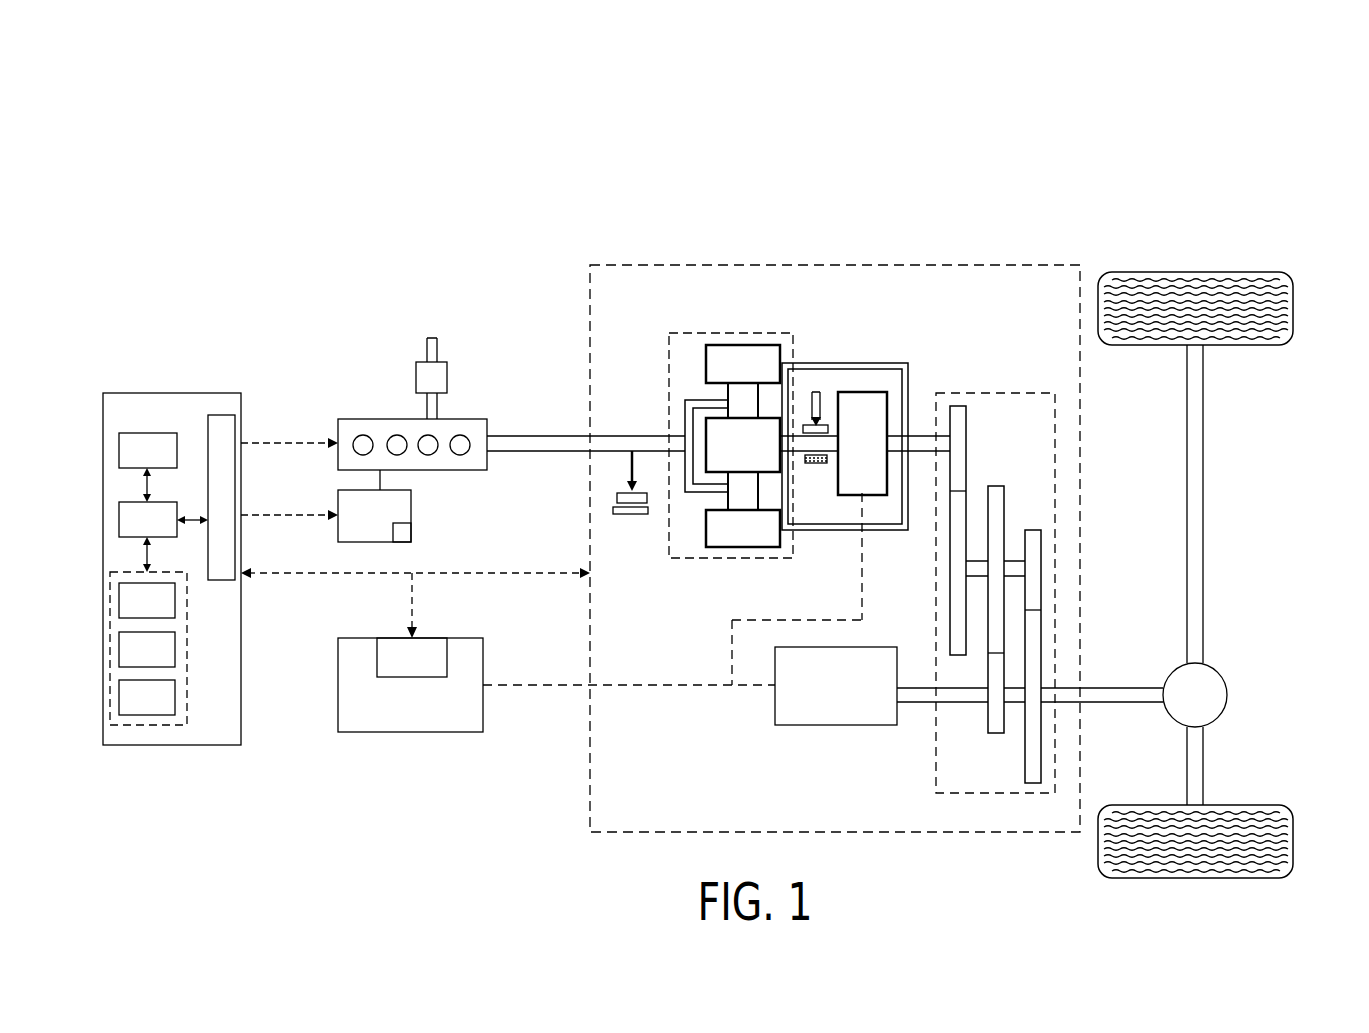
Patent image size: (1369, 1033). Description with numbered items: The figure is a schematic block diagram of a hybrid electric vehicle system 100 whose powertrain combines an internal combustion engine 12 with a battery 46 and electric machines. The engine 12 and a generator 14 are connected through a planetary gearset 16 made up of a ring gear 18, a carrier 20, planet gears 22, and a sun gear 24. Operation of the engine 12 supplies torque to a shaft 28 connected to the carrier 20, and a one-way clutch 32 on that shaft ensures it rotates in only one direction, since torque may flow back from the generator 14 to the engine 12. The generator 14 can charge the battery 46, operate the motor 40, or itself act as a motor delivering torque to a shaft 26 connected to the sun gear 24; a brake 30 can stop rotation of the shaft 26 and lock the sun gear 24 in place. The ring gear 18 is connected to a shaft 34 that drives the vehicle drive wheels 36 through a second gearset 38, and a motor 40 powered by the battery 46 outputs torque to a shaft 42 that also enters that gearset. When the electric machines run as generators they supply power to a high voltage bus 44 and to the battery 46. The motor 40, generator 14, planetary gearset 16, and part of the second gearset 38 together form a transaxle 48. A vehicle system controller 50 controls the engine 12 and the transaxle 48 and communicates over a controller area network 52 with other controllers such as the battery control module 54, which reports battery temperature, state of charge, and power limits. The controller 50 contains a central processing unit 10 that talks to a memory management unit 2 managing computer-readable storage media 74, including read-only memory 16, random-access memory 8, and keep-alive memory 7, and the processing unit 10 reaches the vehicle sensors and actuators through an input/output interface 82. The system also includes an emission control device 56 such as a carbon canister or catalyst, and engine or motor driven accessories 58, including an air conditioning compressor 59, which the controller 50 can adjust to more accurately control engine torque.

The vehicle system 100 is at (1297, 99).
The central processing unit 10 is at (1068, 235).
The internal combustion engine 12 is at (462, 419).
The generator 14 is at (872, 392).
The planetary gearset 16 is at (119, 650).
The ring gear 18 is at (703, 355).
The carrier 20 is at (685, 423).
The planet gears 22 is at (728, 395).
The sun gear 24 is at (781, 462).
The shaft 26 is at (797, 453).
The shaft 28 is at (513, 452).
The brake 30 is at (823, 423).
The one-way clutch 32 is at (617, 497).
The shaft 34 is at (918, 433).
The vehicle drive wheels 36 is at (1233, 347).
The second gearset 38 is at (998, 795).
The motor 40 is at (837, 727).
The shaft 42 is at (922, 687).
The high voltage bus 44 is at (675, 678).
The battery 46 is at (338, 683).
The transaxle 48 is at (590, 312).
The vehicle system controller 50 is at (165, 393).
The controller area network 52 is at (357, 577).
The battery control module 54 is at (435, 642).
The emission control device 56 is at (416, 380).
The accessories 58 is at (338, 500).
The compressor 59 is at (408, 532).
The computer-readable storage media 74 is at (137, 730).
The input/output interface 82 is at (220, 415).
The memory management unit 2 is at (119, 520).
The random-access memory 8 is at (119, 600).
The keep-alive memory 7 is at (119, 697).